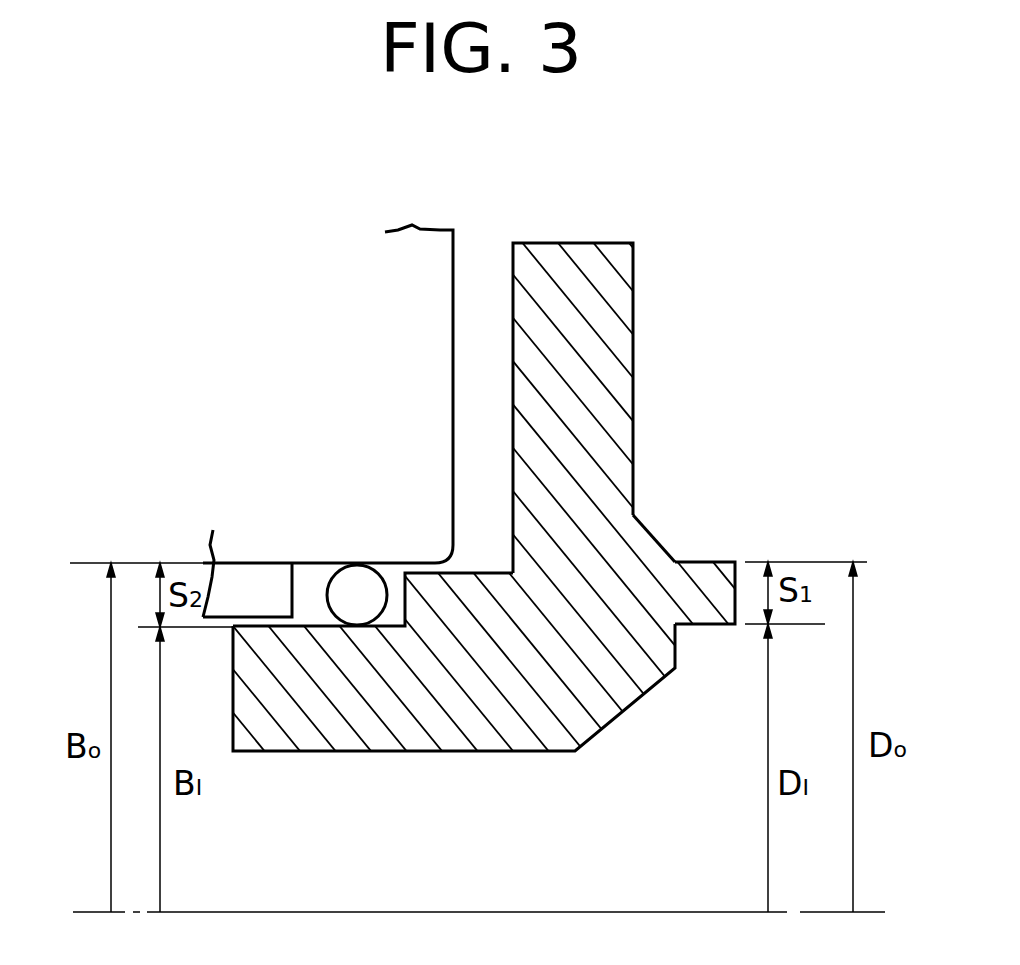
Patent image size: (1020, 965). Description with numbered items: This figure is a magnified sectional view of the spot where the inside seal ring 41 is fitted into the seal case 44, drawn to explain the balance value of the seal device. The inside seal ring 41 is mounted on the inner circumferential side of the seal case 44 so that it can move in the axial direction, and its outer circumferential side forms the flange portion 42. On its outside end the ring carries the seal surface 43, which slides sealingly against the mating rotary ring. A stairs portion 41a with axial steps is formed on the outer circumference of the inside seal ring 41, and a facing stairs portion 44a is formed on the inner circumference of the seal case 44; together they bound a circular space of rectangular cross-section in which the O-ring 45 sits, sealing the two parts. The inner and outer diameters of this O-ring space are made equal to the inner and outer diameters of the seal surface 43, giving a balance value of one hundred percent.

The inside seal ring 41 is at (652, 497).
The stairs portion 41a is at (307, 614).
The flange portion 42 is at (598, 412).
The seal surface 43 is at (738, 588).
The seal case 44 is at (380, 373).
The stairs portion 44a is at (302, 570).
The O-ring 45 is at (352, 592).